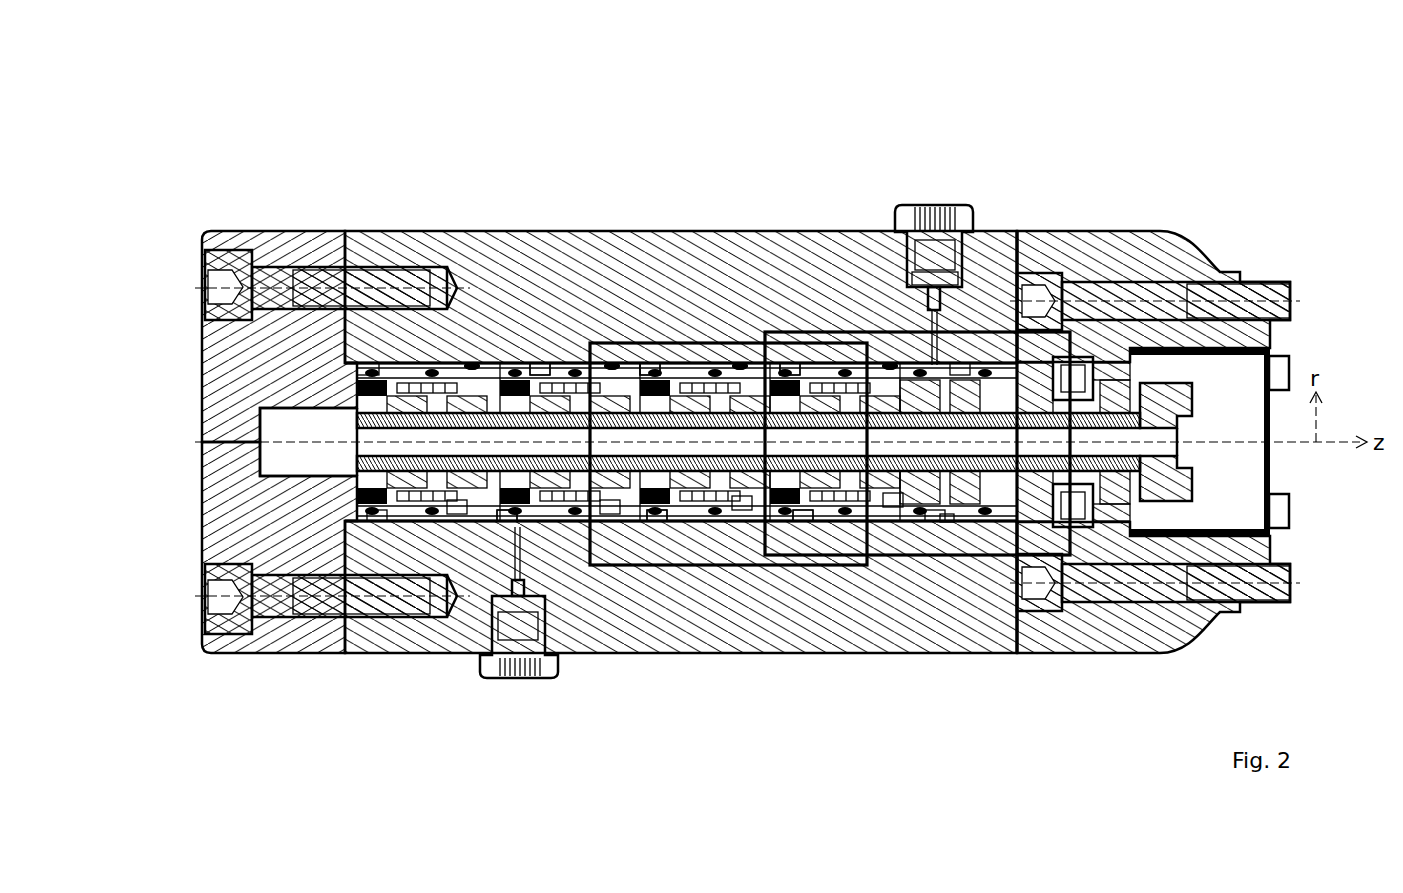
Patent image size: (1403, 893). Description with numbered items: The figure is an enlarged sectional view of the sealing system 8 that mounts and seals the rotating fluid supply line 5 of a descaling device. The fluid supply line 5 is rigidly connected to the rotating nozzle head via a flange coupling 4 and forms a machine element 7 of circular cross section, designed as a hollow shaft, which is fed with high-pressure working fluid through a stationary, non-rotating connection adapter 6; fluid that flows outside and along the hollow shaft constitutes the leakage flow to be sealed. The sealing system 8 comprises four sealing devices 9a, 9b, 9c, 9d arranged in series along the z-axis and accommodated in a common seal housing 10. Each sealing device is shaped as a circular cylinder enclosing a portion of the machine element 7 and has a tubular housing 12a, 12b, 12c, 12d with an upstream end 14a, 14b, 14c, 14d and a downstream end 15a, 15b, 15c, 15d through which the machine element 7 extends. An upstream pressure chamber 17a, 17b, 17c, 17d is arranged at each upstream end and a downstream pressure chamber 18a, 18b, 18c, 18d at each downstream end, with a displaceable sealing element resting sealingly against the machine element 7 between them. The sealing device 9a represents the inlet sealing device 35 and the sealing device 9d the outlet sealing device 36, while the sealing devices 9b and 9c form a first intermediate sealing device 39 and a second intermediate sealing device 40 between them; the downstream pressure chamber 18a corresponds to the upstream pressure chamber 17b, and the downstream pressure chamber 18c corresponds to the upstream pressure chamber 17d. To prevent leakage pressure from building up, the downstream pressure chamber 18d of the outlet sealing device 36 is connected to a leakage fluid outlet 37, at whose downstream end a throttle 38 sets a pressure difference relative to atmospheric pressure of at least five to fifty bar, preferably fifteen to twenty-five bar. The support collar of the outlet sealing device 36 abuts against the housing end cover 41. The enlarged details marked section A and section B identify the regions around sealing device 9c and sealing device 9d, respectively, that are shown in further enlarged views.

The flange coupling 4 is at (1192, 462).
The fluid supply line 5 is at (262, 454).
The machine element 7 is at (252, 460).
The connection adapter 6 is at (282, 656).
The sealing system 8 is at (930, 73).
The sealing device 9a is at (470, 362).
The sealing device 9b is at (612, 365).
The sealing device 9c is at (740, 365).
The sealing device 9d is at (890, 366).
The inlet sealing device 35 is at (471, 221).
The first intermediate sealing device 39 is at (619, 223).
The second intermediate sealing device 40 is at (747, 223).
The outlet sealing device 36 is at (897, 223).
The seal housing 10 is at (683, 655).
The housing 12a is at (457, 512).
The housing 12b is at (612, 523).
The housing 12c is at (742, 505).
The housing 12d is at (893, 500).
The upstream end 14a is at (377, 530).
The upstream end 14b is at (507, 523).
The upstream end 14c is at (657, 533).
The upstream end 14d is at (803, 533).
The downstream end 15a is at (509, 636).
The downstream end 15b is at (648, 636).
The downstream end 15c is at (844, 636).
The downstream end 15d is at (935, 525).
The upstream pressure chamber 17a is at (375, 358).
The upstream pressure chamber 17b is at (560, 271).
The upstream pressure chamber 17c is at (674, 260).
The upstream pressure chamber 17d is at (809, 251).
The downstream pressure chamber 18a is at (540, 368).
The downstream pressure chamber 18b is at (650, 363).
The downstream pressure chamber 18c is at (787, 363).
The downstream pressure chamber 18d is at (960, 360).
The leakage fluid outlet 37 is at (943, 322).
The throttle 38 is at (955, 207).
The housing end cover 41 is at (947, 535).
The section A is at (681, 343).
The section B is at (838, 332).